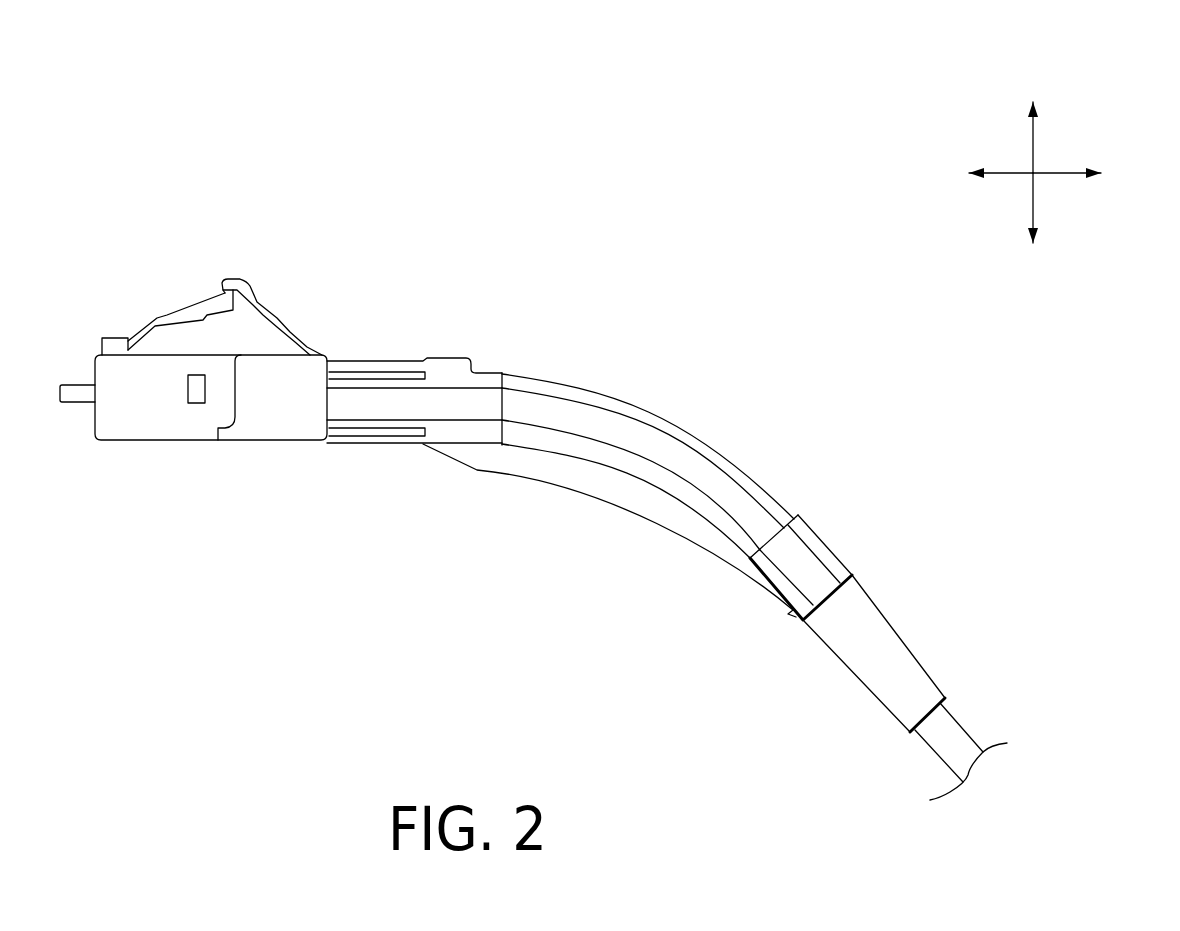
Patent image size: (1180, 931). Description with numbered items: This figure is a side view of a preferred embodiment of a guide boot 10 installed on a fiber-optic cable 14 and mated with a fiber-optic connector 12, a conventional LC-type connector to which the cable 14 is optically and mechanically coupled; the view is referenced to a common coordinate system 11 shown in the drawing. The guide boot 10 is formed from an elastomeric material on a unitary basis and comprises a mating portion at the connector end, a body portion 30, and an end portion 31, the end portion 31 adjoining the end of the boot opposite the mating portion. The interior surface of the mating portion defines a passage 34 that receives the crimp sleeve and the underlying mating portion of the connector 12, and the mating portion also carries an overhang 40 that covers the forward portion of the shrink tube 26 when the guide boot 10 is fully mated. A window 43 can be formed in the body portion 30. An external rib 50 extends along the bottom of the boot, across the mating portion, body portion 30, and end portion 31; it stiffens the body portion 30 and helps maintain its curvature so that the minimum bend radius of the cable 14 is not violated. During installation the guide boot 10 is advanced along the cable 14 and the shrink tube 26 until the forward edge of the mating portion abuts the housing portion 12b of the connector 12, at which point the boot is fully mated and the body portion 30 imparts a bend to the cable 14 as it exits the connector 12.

The guide boot 10 is at (662, 341).
The coordinate system 11 is at (1060, 140).
The fiber-optic connector 12 is at (137, 447).
The housing portion 12b is at (188, 440).
The fiber-optic cable 14 is at (968, 742).
The shrink tube 26 is at (900, 648).
The body portion 30 is at (700, 431).
The end portion 31 is at (829, 530).
The passage 34 is at (382, 449).
The overhang 40 is at (443, 357).
The window 43 is at (498, 365).
The external rib 50 is at (521, 487).